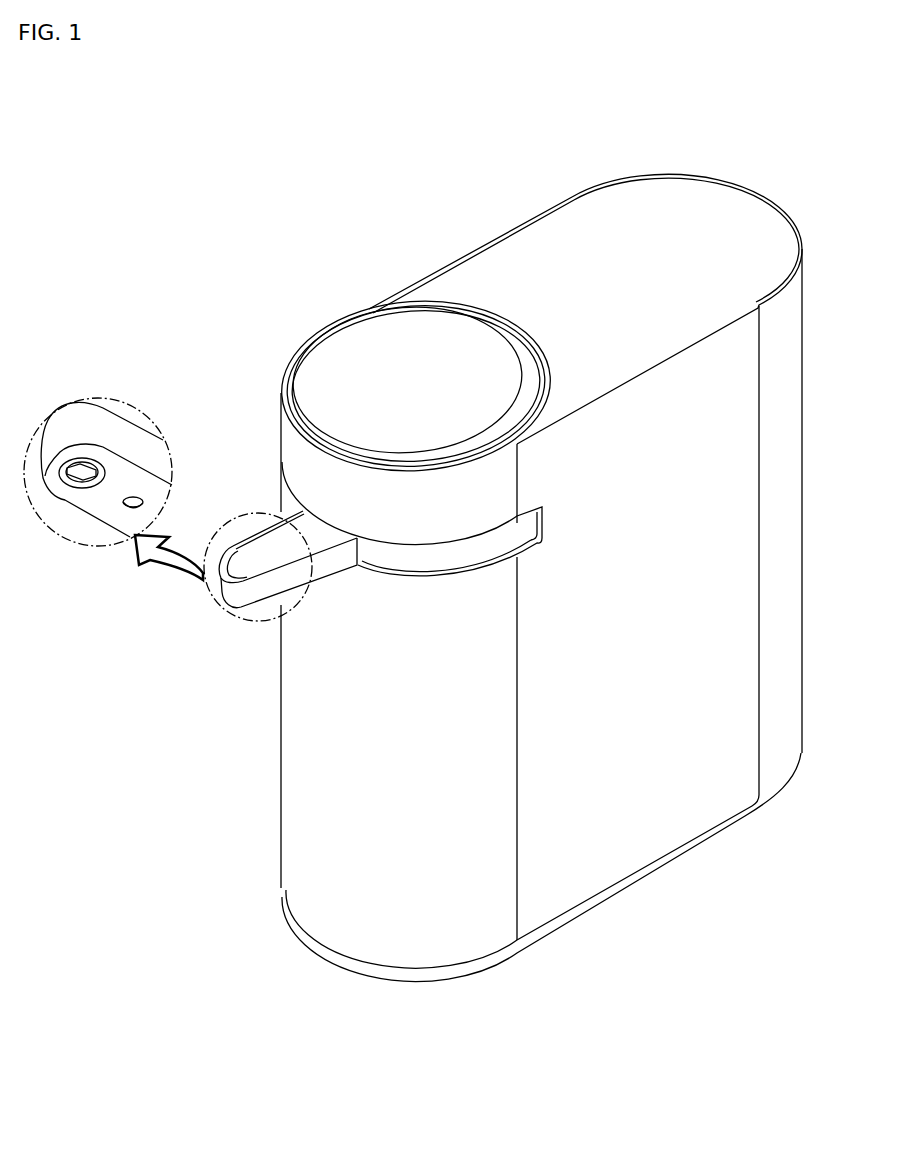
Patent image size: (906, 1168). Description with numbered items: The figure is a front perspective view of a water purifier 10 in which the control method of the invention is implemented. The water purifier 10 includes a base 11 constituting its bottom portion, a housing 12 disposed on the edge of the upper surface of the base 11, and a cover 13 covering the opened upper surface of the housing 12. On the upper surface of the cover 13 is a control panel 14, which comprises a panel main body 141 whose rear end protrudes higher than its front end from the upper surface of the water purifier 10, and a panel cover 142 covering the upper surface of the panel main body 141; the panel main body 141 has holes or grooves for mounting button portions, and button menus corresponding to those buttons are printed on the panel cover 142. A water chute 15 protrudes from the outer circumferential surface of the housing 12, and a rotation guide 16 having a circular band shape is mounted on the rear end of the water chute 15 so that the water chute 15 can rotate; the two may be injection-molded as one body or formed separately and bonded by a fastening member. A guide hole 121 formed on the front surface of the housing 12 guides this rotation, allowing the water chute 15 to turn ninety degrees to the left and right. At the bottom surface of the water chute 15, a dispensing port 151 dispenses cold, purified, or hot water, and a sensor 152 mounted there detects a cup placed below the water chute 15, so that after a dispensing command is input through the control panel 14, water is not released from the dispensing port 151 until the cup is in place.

The water purifier 10 is at (516, 528).
The base 11 is at (572, 917).
The housing 12 is at (605, 862).
The guide hole 121 is at (395, 580).
The cover 13 is at (546, 247).
The control panel 14 is at (416, 318).
The panel main body 141 is at (528, 357).
The panel cover 142 is at (374, 343).
The water chute 15 is at (255, 530).
The dispensing port 151 is at (83, 472).
The sensor 152 is at (150, 502).
The rotation guide 16 is at (458, 557).